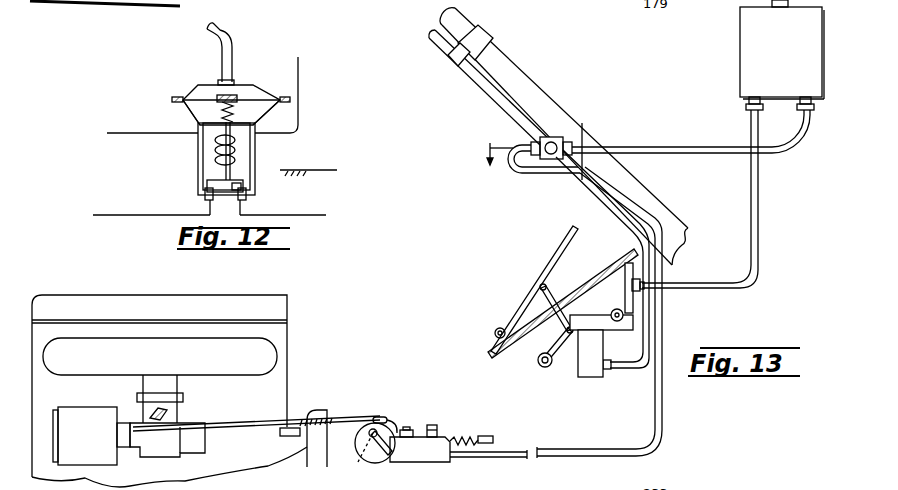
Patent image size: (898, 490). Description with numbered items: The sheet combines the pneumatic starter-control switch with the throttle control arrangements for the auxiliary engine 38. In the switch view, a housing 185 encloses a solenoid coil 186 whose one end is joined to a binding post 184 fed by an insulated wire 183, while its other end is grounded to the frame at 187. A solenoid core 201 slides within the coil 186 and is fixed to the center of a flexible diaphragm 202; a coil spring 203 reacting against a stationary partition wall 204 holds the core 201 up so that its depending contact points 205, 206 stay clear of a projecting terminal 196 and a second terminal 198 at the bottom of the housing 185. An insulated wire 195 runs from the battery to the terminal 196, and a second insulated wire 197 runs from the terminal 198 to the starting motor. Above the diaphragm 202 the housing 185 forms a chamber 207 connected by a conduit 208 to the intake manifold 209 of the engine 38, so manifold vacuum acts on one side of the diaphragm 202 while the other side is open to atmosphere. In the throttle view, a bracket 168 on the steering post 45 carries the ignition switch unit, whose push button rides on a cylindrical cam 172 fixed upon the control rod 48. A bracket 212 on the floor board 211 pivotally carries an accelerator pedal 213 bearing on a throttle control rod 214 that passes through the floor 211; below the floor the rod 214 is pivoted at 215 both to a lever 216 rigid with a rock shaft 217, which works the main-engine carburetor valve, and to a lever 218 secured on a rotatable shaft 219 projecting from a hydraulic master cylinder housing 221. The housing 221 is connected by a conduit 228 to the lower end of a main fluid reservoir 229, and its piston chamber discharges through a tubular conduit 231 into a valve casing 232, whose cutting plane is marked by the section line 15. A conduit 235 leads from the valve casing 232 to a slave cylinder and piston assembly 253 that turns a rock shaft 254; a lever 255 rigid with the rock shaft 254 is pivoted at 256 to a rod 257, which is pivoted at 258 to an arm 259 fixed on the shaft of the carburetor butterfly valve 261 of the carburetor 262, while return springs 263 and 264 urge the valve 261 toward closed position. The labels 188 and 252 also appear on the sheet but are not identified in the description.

In FIG. 13, the section line 15- 15 is at (534, 144).
In FIG. 13, the auxiliary engine 38 is at (290, 385).
In FIG. 13, the steering post 45 is at (530, 95).
In FIG. 13, the control rod 48 is at (497, 98).
In FIG. 13, the bracket 168 is at (480, 34).
In FIG. 13, the cylindrical cam 172 is at (450, 68).
In FIG. 12, the insulated wire 183 is at (298, 80).
In FIG. 12, the binding post 184 is at (250, 132).
In FIG. 12, the housing 185 is at (192, 118).
In FIG. 12, the solenoid coil 186 is at (236, 153).
In FIG. 12, the ground connection 187 is at (322, 168).
In FIG. 12, the line 188 is at (125, 133).
In FIG. 12, the insulated wire 195 is at (331, 213).
In FIG. 12, the projecting terminal 196 is at (246, 201).
In FIG. 12, the second insulated wire 197 is at (120, 215).
In FIG. 12, the second terminal 198 is at (207, 197).
In FIG. 12, the solenoid core 201 is at (215, 172).
In FIG. 12, the flexible diaphragm 202 is at (237, 98).
In FIG. 12, the coil spring 203 is at (200, 143).
In FIG. 12, the stationary partition wall 204 is at (258, 101).
In FIG. 12, the contact point 205 is at (243, 186).
In FIG. 12, the contact point 206 is at (208, 184).
In FIG. 12, the chamber 207 is at (203, 93).
In FIG. 12, the conduit 208 is at (230, 48).
In FIG. 13, the intake manifold 209 is at (243, 367).
In FIG. 13, the floor board 211 is at (492, 352).
In FIG. 13, the bracket 212 is at (502, 328).
In FIG. 13, the accelerator pedal 213 is at (543, 271).
In FIG. 13, the throttle control rod 214 is at (563, 294).
In FIG. 13, the pivot 215 is at (547, 328).
In FIG. 13, the lever 216 is at (563, 353).
In FIG. 13, the rock shaft 217 is at (548, 367).
In FIG. 13, the lever 218 is at (603, 316).
In FIG. 13, the rotatable shaft 219 is at (600, 331).
In FIG. 13, the hydraulic master cylinder housing 221 is at (620, 253).
In FIG. 13, the conduit 228 is at (723, 289).
In FIG. 13, the main fluid reservoir 229 is at (758, 80).
In FIG. 13, the tubular conduit 231 is at (623, 369).
In FIG. 13, the valve casing 232 is at (543, 163).
In FIG. 13, the conduit 235 is at (592, 452).
In FIG. 13, the pipe 252 is at (722, 153).
In FIG. 13, the slave cylinder and piston assembly 253 is at (427, 461).
In FIG. 13, the rock shaft 254 is at (372, 461).
In FIG. 13, the lever 255 is at (397, 426).
In FIG. 13, the pivot 256 is at (374, 418).
In FIG. 13, the rod 257 is at (307, 413).
In FIG. 13, the pivot 258 is at (138, 433).
In FIG. 13, the arm 259 is at (147, 417).
In FIG. 13, the carburetor butterfly valve 261 is at (173, 408).
In FIG. 13, the carburetor 262 is at (193, 453).
In FIG. 13, the return spring 263 is at (310, 431).
In FIG. 13, the return spring 264 is at (472, 438).